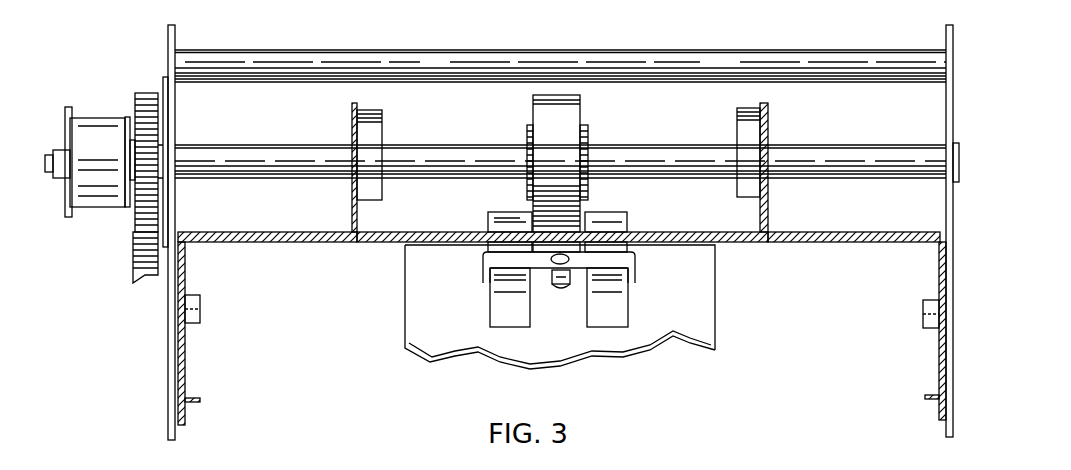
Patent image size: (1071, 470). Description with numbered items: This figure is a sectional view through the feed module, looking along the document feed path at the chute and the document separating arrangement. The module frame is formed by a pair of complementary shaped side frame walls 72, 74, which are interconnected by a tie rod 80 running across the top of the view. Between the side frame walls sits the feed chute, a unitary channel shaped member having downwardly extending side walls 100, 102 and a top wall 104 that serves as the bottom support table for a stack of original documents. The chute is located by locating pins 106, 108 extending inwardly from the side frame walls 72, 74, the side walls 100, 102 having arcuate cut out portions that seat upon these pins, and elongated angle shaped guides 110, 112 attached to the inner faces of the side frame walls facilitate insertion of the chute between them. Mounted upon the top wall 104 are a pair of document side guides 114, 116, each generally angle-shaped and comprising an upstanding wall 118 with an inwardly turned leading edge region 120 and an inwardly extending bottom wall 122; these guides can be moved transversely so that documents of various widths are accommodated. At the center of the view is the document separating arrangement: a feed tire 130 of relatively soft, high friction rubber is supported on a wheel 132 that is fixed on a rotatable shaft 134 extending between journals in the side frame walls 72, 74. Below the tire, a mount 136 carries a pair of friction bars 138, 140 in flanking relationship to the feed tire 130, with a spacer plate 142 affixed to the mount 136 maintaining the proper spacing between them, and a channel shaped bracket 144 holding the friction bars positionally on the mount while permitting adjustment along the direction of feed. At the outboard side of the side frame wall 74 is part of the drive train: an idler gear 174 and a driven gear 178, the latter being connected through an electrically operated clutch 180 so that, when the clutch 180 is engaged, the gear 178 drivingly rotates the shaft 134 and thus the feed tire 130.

The side frame wall 72 is at (946, 204).
The side frame wall 74 is at (168, 342).
The tie rod 80 is at (677, 50).
The side wall 100 is at (939, 262).
The side wall 102 is at (186, 268).
The top wall 104 is at (773, 242).
The locating pin 106 is at (925, 330).
The locating pin 108 is at (195, 325).
The angle shaped guide 110 is at (925, 400).
The angle shaped guide 112 is at (196, 400).
The document side guide 114 is at (784, 102).
The document side guide 116 is at (342, 116).
The upstanding wall 118 is at (352, 128).
The inwardly turned leading edge region 120 is at (380, 118).
The bottom wall 122 is at (385, 232).
The feed tire 130 is at (533, 105).
The wheel 132 is at (527, 130).
The rotatable shaft 134 is at (642, 147).
The mount 136 is at (715, 290).
The friction bar 138 is at (628, 302).
The friction bar 140 is at (490, 305).
The spacer plate 142 is at (560, 290).
The channel shaped bracket 144 is at (638, 266).
The idler gear 174 is at (133, 263).
The driven gear 178 is at (150, 94).
The electrically operated clutch 180 is at (97, 116).